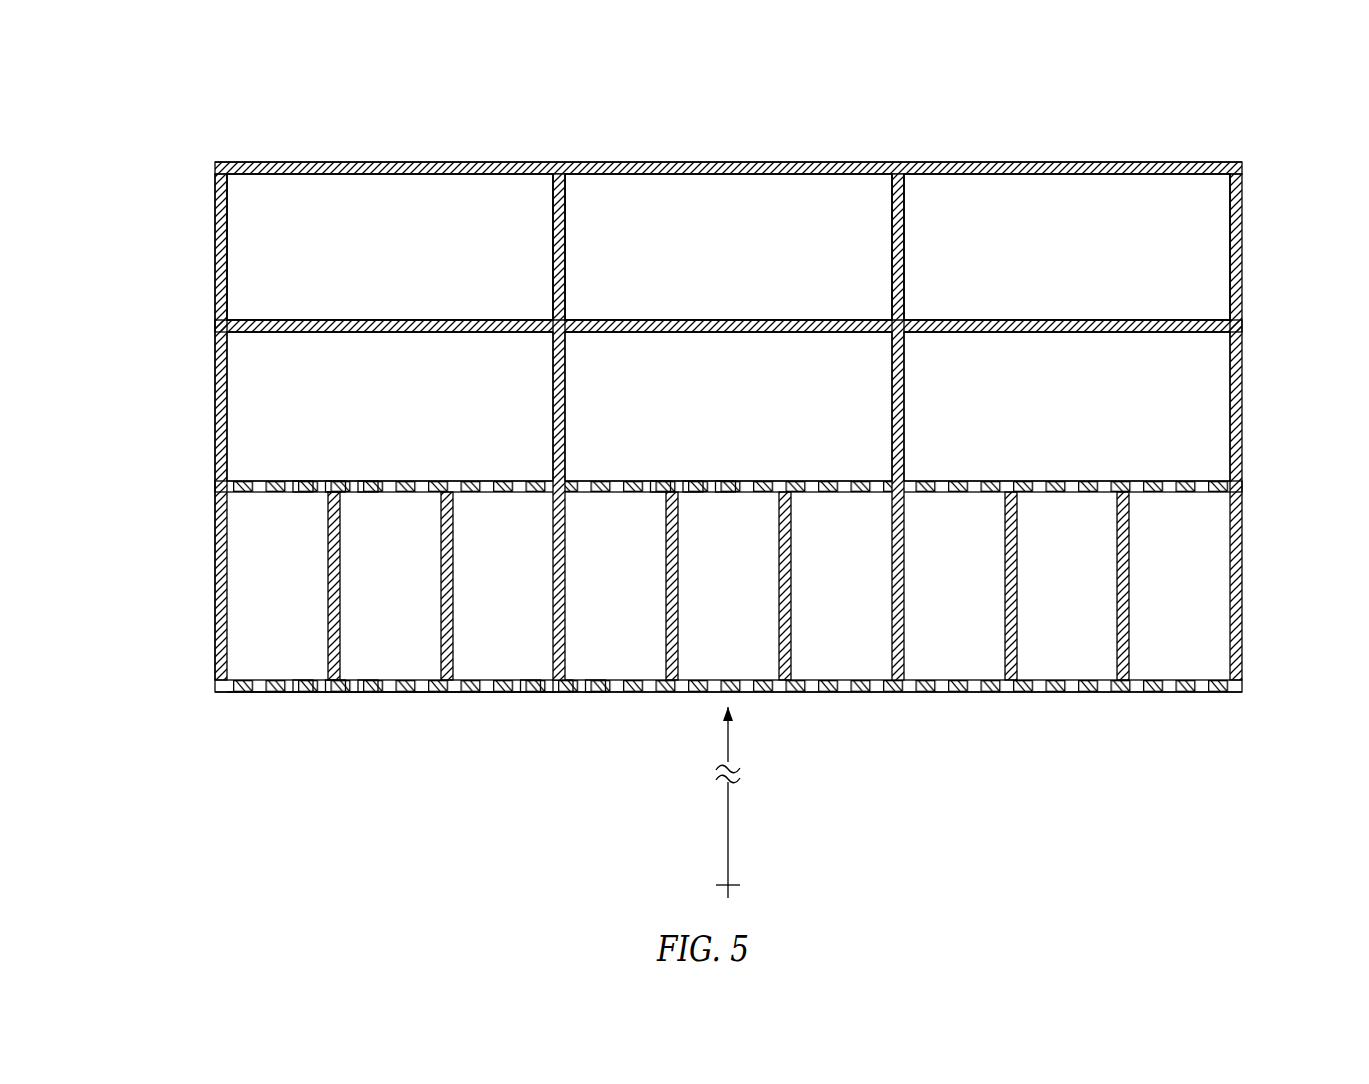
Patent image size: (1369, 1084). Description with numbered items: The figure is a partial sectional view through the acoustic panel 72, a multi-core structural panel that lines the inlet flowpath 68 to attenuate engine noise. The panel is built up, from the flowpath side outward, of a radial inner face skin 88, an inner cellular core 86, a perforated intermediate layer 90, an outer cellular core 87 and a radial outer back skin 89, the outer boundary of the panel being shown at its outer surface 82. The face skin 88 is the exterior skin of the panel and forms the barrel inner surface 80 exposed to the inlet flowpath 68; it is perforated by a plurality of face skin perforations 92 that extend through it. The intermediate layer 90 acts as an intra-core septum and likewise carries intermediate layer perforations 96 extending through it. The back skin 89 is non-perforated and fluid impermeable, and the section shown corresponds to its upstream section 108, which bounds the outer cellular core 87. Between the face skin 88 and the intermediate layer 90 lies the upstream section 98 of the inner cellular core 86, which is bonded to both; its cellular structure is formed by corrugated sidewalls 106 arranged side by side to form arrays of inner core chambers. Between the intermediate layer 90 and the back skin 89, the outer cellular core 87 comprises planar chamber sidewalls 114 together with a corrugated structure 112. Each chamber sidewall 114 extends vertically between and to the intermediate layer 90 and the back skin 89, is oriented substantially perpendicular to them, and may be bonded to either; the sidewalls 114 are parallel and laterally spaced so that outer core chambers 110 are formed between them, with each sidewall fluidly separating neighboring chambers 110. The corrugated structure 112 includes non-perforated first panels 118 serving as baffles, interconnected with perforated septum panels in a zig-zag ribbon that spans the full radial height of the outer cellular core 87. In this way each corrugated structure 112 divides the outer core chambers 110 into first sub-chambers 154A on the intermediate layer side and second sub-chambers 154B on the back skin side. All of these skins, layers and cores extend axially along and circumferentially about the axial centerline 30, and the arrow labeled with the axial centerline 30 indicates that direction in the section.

The acoustic panel 72 is at (168, 101).
The top plate 82 is at (287, 162).
The back skin 89 is at (643, 171).
The upstream section of the back skin 108 is at (190, 168).
The outer cellular core 87 is at (190, 325).
The intermediate layer 90 is at (200, 485).
The face skin 88 is at (200, 688).
The barrel inner surface 80 is at (238, 692).
The face skin perforations 92 is at (293, 692).
The inner cellular core 86 is at (144, 427).
The upstream section of the inner cellular core 98 is at (186, 590).
The chamber sidewalls 114 is at (207, 252).
The corrugated sidewalls 106 is at (215, 553).
The outer core chambers 110 is at (448, 194).
The second sub-chambers 154B is at (400, 274).
The first sub-chambers 154A is at (499, 445).
The corrugated structure 112 is at (291, 350).
The first panels 118 is at (405, 332).
The intermediate layer perforations 96 is at (353, 481).
The inlet flowpath 68 is at (462, 823).
The axial centerline 30 is at (729, 884).